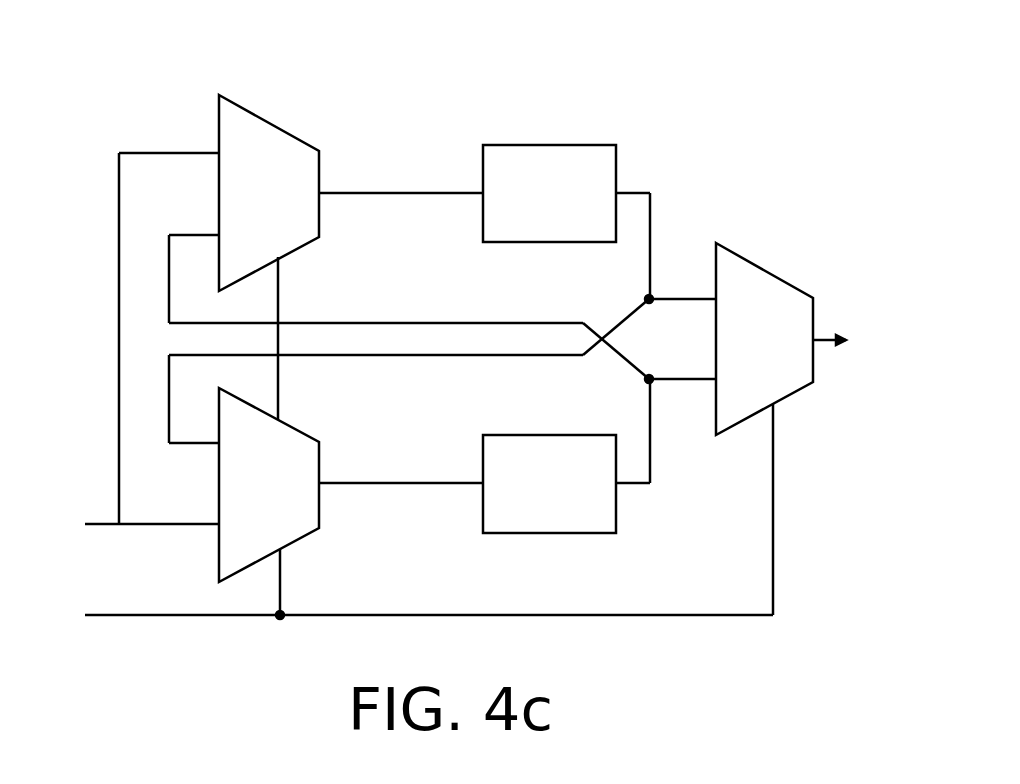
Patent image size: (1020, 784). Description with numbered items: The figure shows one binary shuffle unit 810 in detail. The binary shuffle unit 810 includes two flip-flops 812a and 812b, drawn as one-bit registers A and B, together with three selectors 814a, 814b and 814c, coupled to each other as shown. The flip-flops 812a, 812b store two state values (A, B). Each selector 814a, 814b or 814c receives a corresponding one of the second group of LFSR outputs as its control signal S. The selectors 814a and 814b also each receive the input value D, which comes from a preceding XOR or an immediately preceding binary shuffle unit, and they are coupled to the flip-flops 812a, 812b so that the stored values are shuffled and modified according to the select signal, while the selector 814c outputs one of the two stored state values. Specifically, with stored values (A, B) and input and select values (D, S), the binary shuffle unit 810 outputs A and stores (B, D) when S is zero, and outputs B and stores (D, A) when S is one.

The binary shuffle unit 810 is at (792, 46).
The flip-flop 812a is at (580, 232).
The flip-flop 812b is at (580, 526).
The selector 814a is at (300, 206).
The selector 814b is at (300, 497).
The selector 814c is at (795, 351).